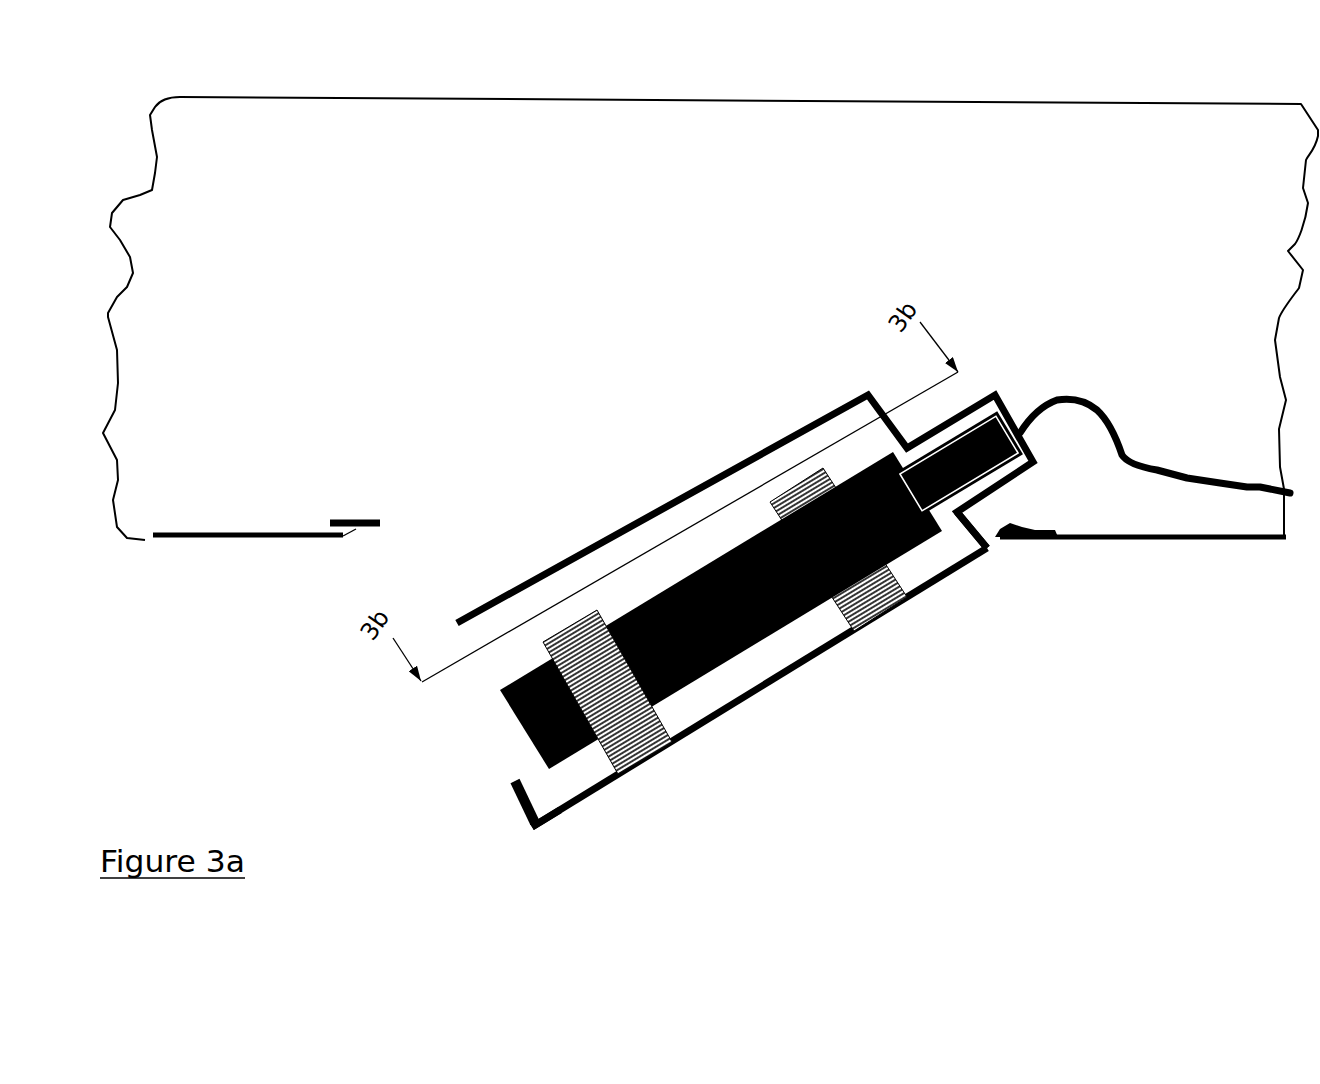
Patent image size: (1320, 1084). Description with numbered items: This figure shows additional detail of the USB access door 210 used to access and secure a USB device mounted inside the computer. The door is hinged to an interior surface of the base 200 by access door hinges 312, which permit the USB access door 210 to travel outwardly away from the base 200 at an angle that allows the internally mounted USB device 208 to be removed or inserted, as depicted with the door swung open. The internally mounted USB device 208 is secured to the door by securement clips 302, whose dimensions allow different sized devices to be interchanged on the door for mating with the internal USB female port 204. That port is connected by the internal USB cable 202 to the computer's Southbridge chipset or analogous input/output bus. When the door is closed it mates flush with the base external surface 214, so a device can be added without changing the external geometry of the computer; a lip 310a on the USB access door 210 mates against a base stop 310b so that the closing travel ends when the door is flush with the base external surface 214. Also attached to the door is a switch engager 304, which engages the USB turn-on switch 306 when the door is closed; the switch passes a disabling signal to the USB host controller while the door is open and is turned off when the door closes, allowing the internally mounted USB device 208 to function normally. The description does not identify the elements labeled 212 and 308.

The base 200 is at (308, 191).
The internal USB cable 202 is at (1088, 397).
The internal USB female port 204 is at (975, 404).
The internally mounted USB device 208 is at (760, 650).
The USB access door 210 is at (907, 638).
The housing bottom wall 212 is at (823, 653).
The base external surface 214 is at (228, 536).
The securement clips 302 is at (670, 746).
The switch engager 304 is at (518, 806).
The USB turn-on switch 306 is at (342, 522).
The notch 308 is at (962, 534).
The lip 310a is at (522, 838).
The base stop 310b is at (355, 536).
The access door hinges 312 is at (1018, 510).